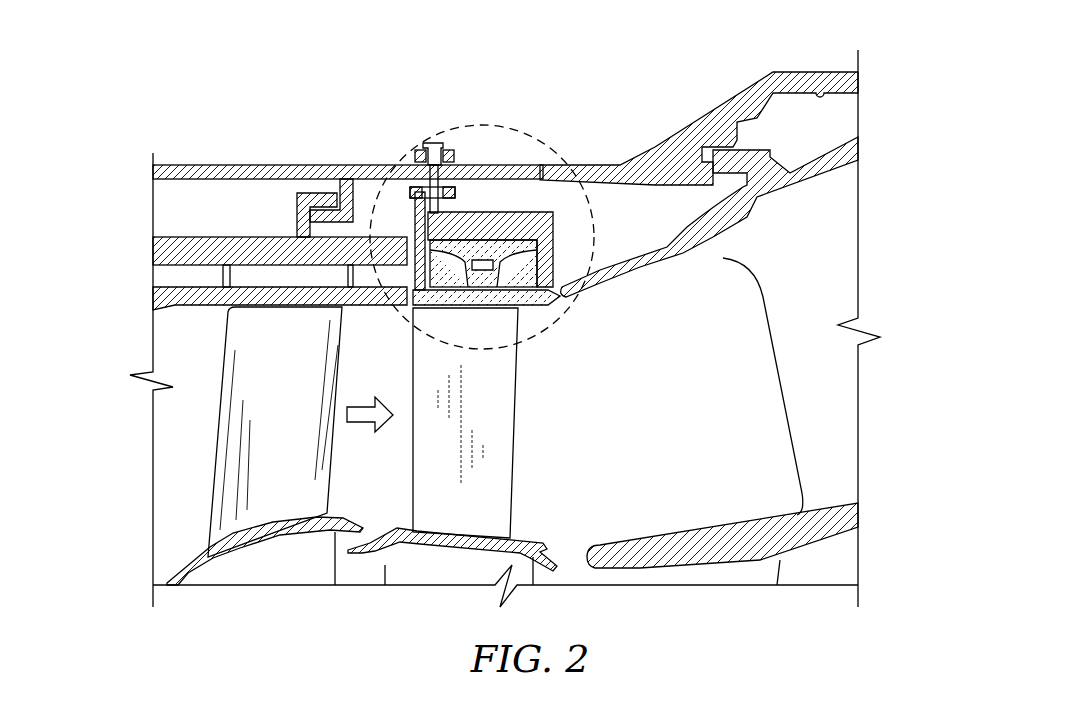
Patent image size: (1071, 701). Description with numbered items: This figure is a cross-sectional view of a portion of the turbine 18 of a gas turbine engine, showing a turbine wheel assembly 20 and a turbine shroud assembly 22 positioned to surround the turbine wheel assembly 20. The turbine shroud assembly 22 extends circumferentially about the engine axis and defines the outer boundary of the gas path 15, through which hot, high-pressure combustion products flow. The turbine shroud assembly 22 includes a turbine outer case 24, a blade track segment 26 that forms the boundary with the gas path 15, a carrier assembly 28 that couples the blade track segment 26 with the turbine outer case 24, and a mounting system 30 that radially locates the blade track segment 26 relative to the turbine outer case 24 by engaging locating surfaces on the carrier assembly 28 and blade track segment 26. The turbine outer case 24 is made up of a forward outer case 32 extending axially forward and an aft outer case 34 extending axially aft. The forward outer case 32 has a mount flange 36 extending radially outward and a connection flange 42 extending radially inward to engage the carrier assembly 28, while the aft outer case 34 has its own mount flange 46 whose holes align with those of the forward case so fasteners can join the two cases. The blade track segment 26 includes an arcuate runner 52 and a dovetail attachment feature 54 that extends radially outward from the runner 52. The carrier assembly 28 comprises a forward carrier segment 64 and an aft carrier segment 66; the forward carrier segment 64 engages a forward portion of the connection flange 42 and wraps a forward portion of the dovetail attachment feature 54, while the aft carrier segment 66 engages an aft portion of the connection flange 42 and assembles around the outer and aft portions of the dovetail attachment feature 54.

The gas path 15 is at (367, 413).
The turbine 18 is at (150, 104).
The turbine wheel assembly 20 is at (579, 511).
The turbine shroud assembly 22 is at (507, 183).
The turbine outer case 24 is at (468, 130).
The blade track segment 26 is at (534, 313).
The carrier assembly 28 is at (540, 199).
The mounting system 30 is at (348, 146).
The forward outer case 32 is at (350, 165).
The aft outer case 34 is at (638, 157).
The mount flange 36 is at (418, 158).
The connection flange 42 is at (430, 184).
The mount flange 46 is at (452, 158).
The runner 52 is at (548, 297).
The dovetail attachment feature 54 is at (512, 258).
The forward carrier segment 64 is at (443, 204).
The aft carrier segment 66 is at (538, 220).